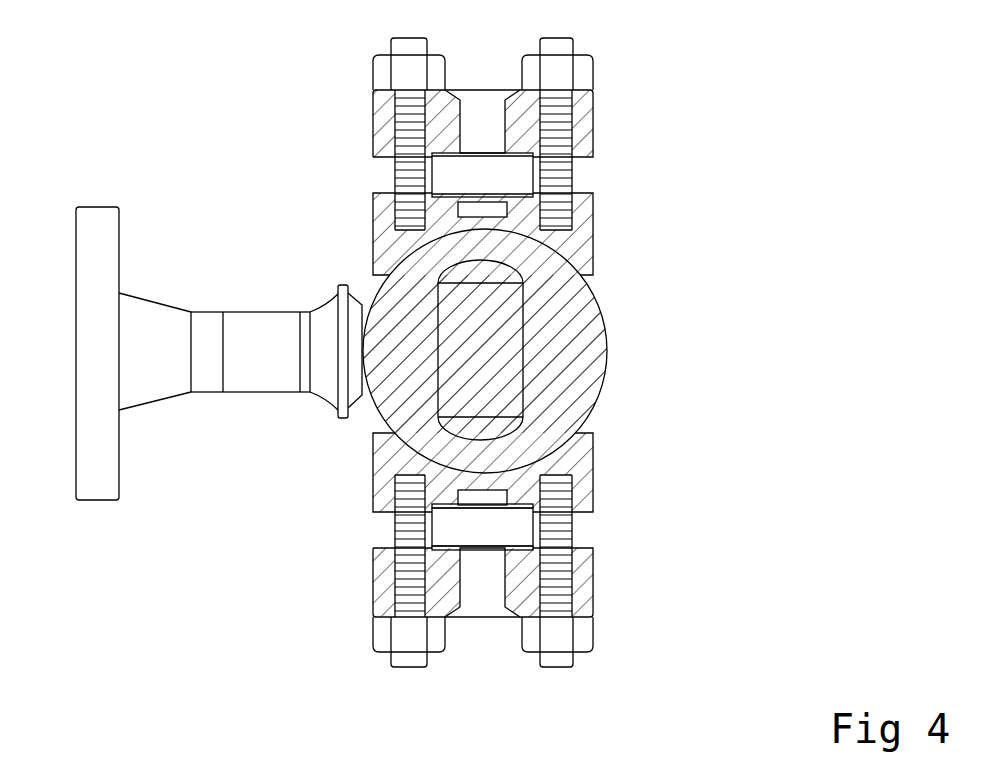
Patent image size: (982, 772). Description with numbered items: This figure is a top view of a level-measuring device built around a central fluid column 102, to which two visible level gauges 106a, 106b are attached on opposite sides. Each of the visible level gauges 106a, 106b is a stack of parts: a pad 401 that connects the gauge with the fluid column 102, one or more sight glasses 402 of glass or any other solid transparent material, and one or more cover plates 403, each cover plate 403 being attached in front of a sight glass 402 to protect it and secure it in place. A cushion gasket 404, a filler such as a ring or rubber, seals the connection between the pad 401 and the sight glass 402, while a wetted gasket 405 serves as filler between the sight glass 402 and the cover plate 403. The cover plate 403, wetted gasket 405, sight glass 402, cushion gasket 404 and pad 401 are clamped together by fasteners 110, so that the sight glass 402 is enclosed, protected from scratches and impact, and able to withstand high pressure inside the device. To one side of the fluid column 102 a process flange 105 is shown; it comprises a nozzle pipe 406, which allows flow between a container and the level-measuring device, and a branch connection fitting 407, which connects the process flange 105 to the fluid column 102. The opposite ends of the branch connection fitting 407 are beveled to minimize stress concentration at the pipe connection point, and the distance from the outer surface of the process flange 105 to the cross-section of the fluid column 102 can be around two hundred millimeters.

The fluid column 102 is at (590, 338).
The process flange 105 is at (145, 312).
The visible level gauge 106a is at (593, 472).
The visible level gauge 106b is at (593, 108).
The fasteners 110 is at (408, 665).
The pad 401 is at (583, 455).
The sight glass 402 is at (530, 529).
The cover plate 403 is at (577, 595).
The cushion gasket 404 is at (523, 505).
The wetted gasket 405 is at (523, 550).
The nozzle pipe 406 is at (250, 338).
The branch connection fitting 407 is at (327, 312).